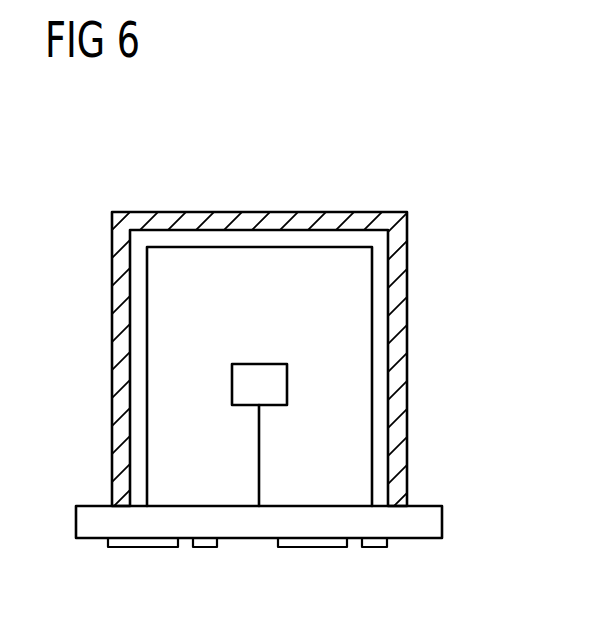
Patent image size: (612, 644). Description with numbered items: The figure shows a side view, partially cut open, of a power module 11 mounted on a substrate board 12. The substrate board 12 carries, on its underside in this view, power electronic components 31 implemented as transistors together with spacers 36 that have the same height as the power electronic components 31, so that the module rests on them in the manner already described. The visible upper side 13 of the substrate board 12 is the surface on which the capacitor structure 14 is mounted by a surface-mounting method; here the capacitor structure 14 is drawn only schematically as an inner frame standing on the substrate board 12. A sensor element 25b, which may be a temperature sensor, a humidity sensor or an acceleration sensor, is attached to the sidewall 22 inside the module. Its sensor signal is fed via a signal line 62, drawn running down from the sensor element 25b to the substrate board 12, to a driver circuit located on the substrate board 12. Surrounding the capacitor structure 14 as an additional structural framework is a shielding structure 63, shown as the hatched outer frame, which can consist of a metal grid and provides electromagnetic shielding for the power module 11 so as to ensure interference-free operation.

The power module 11 is at (384, 119).
The substrate board 12 is at (442, 520).
The upper side 13 is at (423, 496).
The capacitor structure 14 is at (350, 346).
The sidewall 22 is at (262, 275).
The sensor element 25b is at (232, 380).
The power electronic component 31 is at (145, 549).
The spacer 36 is at (205, 549).
The signal line 62 is at (259, 440).
The shielding structure 63 is at (332, 222).